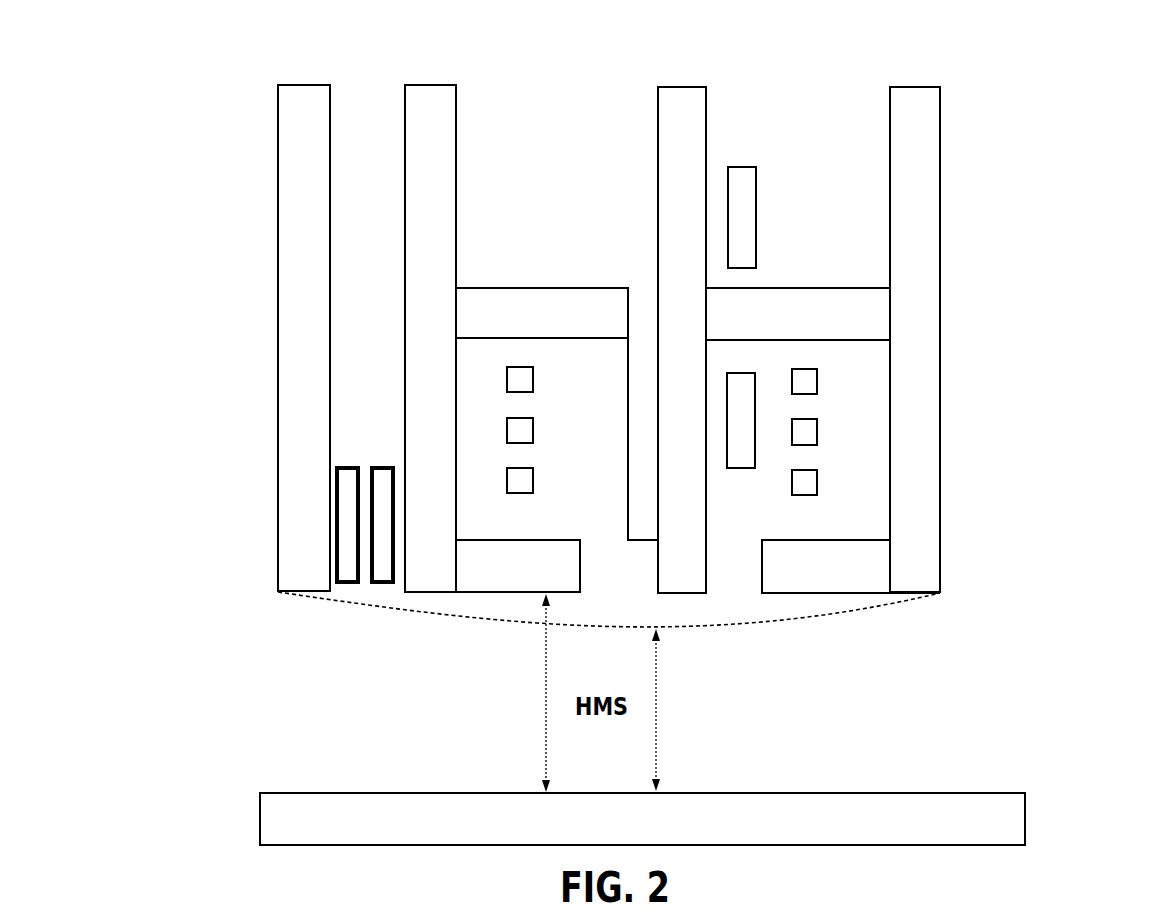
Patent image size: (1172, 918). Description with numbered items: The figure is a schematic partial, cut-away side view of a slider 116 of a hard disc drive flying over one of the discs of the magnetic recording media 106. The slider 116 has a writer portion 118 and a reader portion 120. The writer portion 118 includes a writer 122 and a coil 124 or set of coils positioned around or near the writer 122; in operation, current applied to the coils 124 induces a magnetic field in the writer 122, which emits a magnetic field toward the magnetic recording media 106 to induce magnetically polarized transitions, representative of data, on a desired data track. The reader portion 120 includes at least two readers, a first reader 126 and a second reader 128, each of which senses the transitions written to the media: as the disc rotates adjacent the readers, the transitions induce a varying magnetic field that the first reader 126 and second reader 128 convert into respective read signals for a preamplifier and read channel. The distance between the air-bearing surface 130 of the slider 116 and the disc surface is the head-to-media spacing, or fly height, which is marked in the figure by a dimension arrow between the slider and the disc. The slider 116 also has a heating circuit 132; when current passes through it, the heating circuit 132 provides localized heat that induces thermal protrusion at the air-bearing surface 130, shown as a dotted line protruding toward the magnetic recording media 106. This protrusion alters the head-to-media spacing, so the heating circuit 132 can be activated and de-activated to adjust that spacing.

The magnetic recording media 106 is at (643, 828).
The slider 116 is at (170, 99).
The writer portion 118 is at (734, 652).
The reader portion 120 is at (428, 660).
The writer 122 is at (680, 110).
The coil 124 is at (805, 427).
The first reader 126 is at (346, 570).
The second reader 128 is at (383, 570).
The air-bearing surface 130 is at (803, 593).
The heating circuit 132 is at (738, 188).